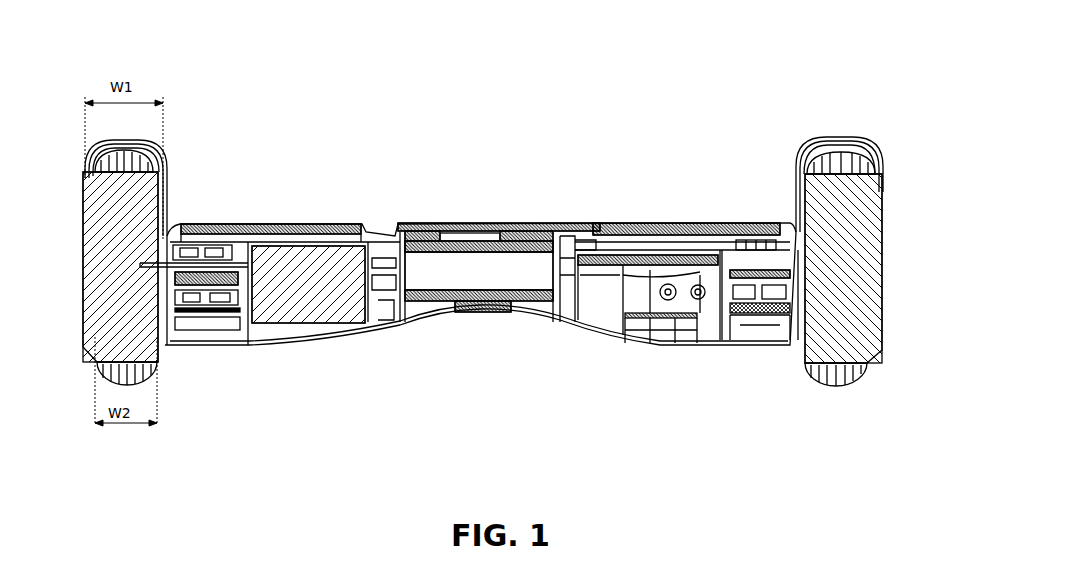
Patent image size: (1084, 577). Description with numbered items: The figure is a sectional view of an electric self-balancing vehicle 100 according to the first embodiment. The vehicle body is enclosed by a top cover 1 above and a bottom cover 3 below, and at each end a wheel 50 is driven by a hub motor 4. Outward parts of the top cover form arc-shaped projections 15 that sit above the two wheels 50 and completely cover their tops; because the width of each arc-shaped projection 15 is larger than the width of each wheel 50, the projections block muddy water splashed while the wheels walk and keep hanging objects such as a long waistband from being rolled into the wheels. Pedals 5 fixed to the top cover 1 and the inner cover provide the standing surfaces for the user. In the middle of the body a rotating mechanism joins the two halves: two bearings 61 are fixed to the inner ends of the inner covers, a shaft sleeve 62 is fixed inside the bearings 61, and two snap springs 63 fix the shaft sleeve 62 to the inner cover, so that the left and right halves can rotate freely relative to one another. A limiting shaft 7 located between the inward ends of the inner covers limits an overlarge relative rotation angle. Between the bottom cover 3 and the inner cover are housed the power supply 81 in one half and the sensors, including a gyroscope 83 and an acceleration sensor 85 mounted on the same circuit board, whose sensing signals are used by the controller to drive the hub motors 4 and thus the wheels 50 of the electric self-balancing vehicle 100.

The electric self-balancing vehicle 100 is at (616, 81).
The top cover 1 is at (415, 226).
The bottom cover 3 is at (267, 343).
The hub motor 4 is at (93, 222).
The pedal 5 is at (275, 223).
The limiting shaft 7 is at (503, 317).
The arc-shaped projection 15 is at (147, 142).
The wheel 50 is at (867, 152).
The bearing 61 is at (494, 226).
The shaft sleeve 62 is at (514, 237).
The snap spring 63 is at (563, 230).
The power supply 81 is at (330, 320).
The gyroscope 83 is at (185, 330).
The acceleration sensor 85 is at (210, 318).